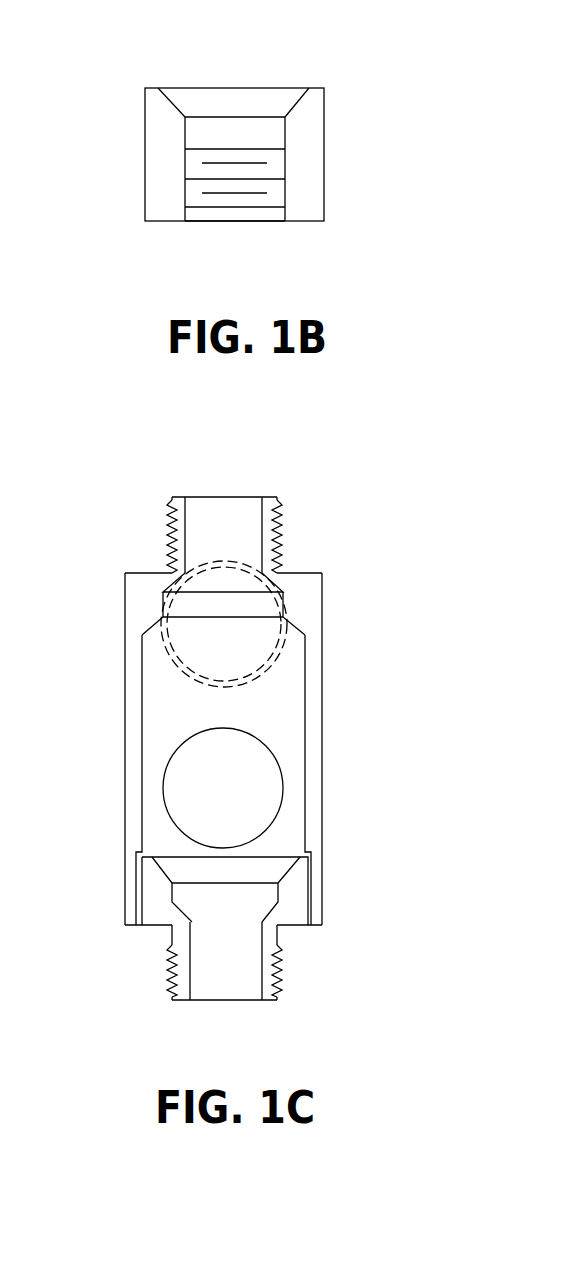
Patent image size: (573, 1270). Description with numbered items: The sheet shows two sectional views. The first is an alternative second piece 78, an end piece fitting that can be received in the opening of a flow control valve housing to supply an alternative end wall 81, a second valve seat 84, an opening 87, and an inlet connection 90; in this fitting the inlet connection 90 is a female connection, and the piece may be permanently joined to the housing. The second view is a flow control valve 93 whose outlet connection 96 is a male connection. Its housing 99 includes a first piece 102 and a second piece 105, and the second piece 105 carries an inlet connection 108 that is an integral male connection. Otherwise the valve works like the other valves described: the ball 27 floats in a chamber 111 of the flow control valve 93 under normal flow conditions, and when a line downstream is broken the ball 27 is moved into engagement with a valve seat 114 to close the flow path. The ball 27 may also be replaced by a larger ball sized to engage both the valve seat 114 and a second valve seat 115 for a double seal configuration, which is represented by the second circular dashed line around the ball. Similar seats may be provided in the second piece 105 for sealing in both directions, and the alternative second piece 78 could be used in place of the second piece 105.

In FIG. 1B, the alternative second piece 78 is at (190, 139).
In FIG. 1B, the end wall 81 is at (183, 102).
In FIG. 1B, the second valve seat 84 is at (282, 115).
In FIG. 1B, the opening 87 is at (278, 132).
In FIG. 1B, the inlet connection 90 is at (256, 240).
In FIG. 1C, the outlet connection 96 is at (264, 741).
In FIG. 1C, the flow control valve 93 is at (378, 571).
In FIG. 1C, the second valve seat 115 is at (183, 573).
In FIG. 1C, the valve seat 114 is at (162, 613).
In FIG. 1C, the first piece 102 is at (313, 627).
In FIG. 1C, the ball 27 is at (265, 792).
In FIG. 1C, the chamber 111 is at (143, 715).
In FIG. 1C, the housing 99 is at (264, 780).
In FIG. 1C, the second piece 105 is at (293, 897).
In FIG. 1C, the inlet connection 108 is at (278, 1022).